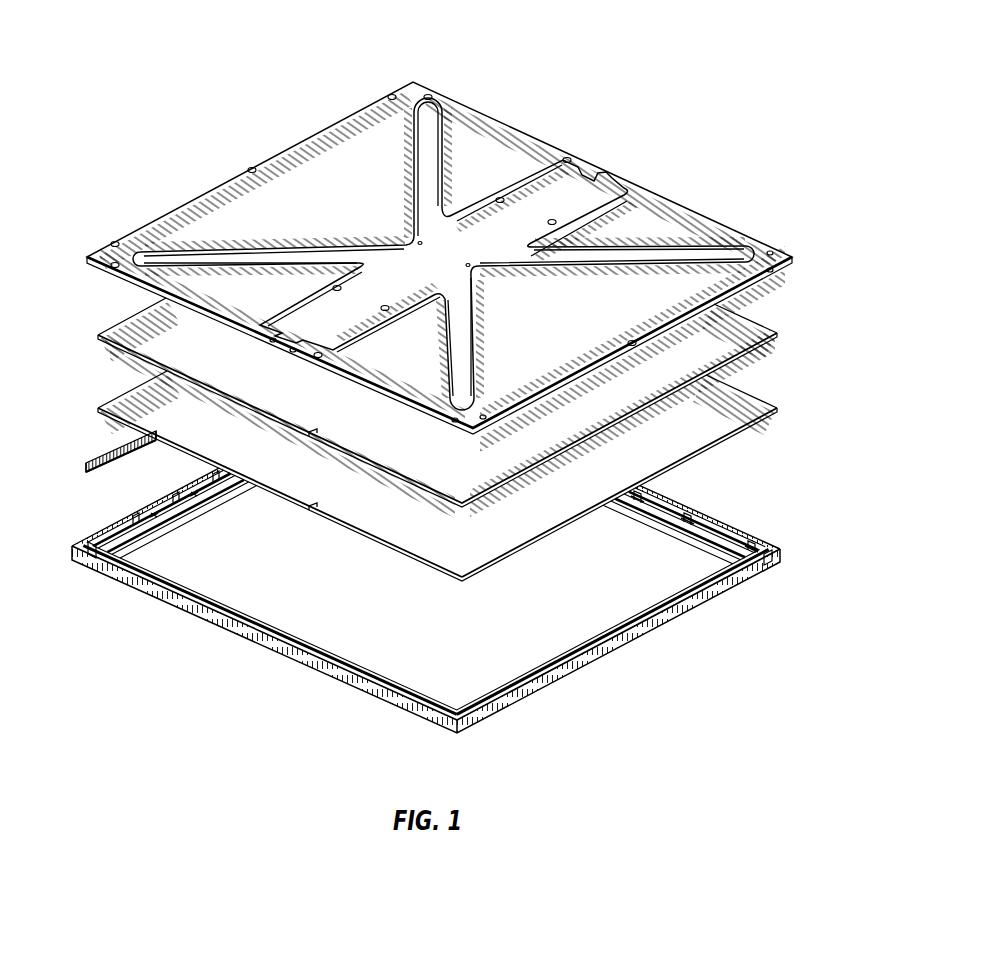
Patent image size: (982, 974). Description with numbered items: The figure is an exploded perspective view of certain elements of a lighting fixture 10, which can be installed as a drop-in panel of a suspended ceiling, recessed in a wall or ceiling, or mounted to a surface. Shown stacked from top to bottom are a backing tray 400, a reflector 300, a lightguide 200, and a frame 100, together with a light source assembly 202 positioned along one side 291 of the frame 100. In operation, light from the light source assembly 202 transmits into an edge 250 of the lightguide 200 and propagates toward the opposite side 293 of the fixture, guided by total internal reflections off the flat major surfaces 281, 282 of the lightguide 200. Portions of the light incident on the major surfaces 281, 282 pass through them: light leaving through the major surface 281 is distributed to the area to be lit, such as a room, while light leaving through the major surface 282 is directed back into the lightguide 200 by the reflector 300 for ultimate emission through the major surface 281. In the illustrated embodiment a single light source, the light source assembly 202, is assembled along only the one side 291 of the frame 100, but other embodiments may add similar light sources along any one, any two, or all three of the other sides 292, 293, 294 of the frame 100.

The lighting fixture 10 is at (113, 116).
The frame 100 is at (758, 577).
The lightguide 200 is at (759, 398).
The light source assembly 202 is at (102, 447).
The edge 250 is at (116, 384).
The major surface 281 is at (505, 567).
The major surface 282 is at (486, 547).
The side 291 is at (97, 514).
The side 292 is at (234, 652).
The side 293 is at (650, 652).
The side 294 is at (715, 497).
The reflector 300 is at (759, 323).
The backing tray 400 is at (760, 248).